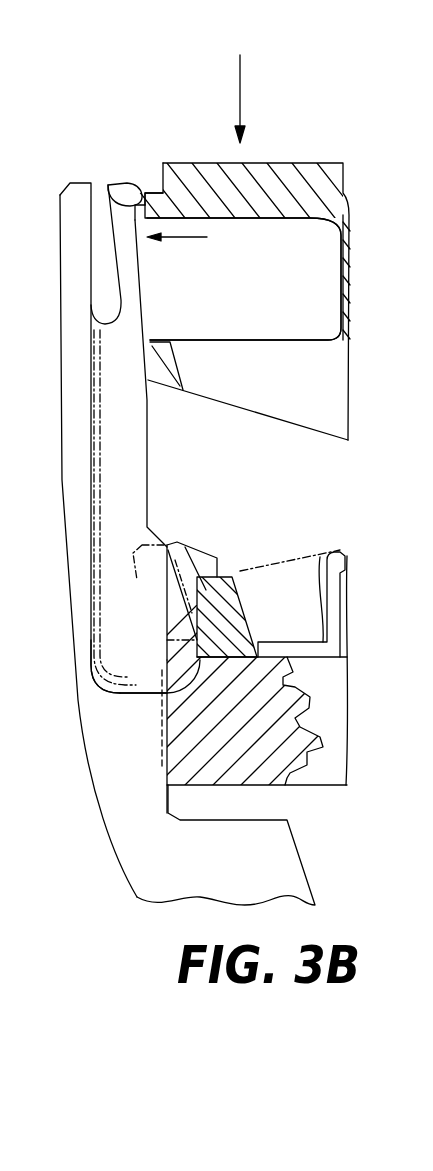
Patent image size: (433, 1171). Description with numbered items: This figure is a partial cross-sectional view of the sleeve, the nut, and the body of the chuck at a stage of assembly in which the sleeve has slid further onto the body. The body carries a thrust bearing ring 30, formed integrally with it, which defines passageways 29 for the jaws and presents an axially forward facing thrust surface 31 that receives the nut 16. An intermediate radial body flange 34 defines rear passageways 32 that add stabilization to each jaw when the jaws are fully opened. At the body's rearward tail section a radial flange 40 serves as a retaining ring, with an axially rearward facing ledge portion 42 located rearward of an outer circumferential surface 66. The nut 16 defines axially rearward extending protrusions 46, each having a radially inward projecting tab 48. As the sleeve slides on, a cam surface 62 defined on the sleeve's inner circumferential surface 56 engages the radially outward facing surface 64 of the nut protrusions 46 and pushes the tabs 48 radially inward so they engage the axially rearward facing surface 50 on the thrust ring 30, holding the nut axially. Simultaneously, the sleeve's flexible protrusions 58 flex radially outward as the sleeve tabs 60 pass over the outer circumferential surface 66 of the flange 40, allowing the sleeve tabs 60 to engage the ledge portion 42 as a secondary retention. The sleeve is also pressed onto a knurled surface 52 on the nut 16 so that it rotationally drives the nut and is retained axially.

The nut 16 is at (223, 787).
The passageways 29 is at (253, 632).
The thrust bearing ring 30 is at (167, 663).
The thrust surface 31 is at (173, 703).
The rear passageways 32 is at (290, 427).
The intermediate radial body flange 34 is at (185, 368).
The radial flange 40 is at (283, 162).
The ledge portion 42 is at (145, 192).
The protrusions 46 is at (167, 618).
The tabs 48 is at (217, 577).
The axially rearward facing surface 50 is at (241, 577).
The knurled surface 52 is at (160, 752).
The inner circumferential surface 56 is at (147, 460).
The flexible protrusions 58 is at (142, 277).
The sleeve tabs 60 is at (137, 198).
The cam surface 62 is at (182, 551).
The radially outward facing surface 64 is at (167, 548).
The outer circumferential surface 66 is at (140, 203).